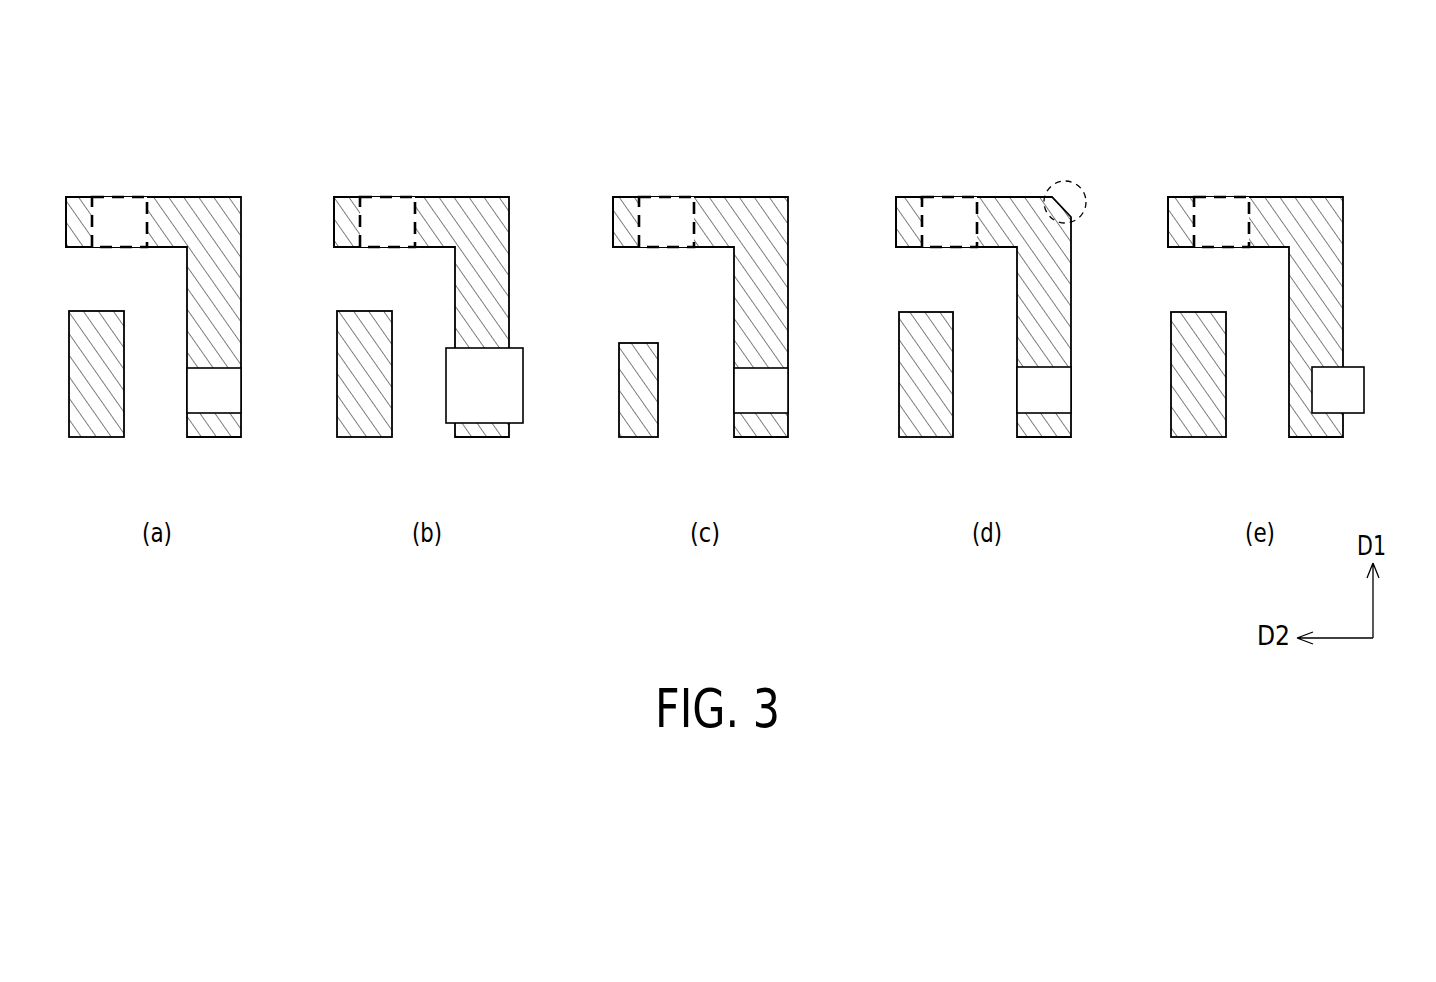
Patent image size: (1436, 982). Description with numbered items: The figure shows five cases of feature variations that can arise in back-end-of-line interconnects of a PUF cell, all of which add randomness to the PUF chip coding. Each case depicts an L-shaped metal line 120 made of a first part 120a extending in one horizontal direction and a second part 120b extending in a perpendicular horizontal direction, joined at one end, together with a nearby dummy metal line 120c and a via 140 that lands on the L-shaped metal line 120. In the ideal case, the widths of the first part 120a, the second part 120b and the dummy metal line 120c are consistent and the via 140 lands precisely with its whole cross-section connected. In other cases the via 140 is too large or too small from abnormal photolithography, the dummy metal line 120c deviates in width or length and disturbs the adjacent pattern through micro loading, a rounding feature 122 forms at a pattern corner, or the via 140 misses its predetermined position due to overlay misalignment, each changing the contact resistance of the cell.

The L-shaped metal line 120 is at (751, 284).
The first part 120a is at (222, 290).
The second part 120b is at (188, 208).
The dummy metal line 120c is at (102, 420).
The rounding feature 122 is at (1082, 184).
The via 140 is at (112, 207).